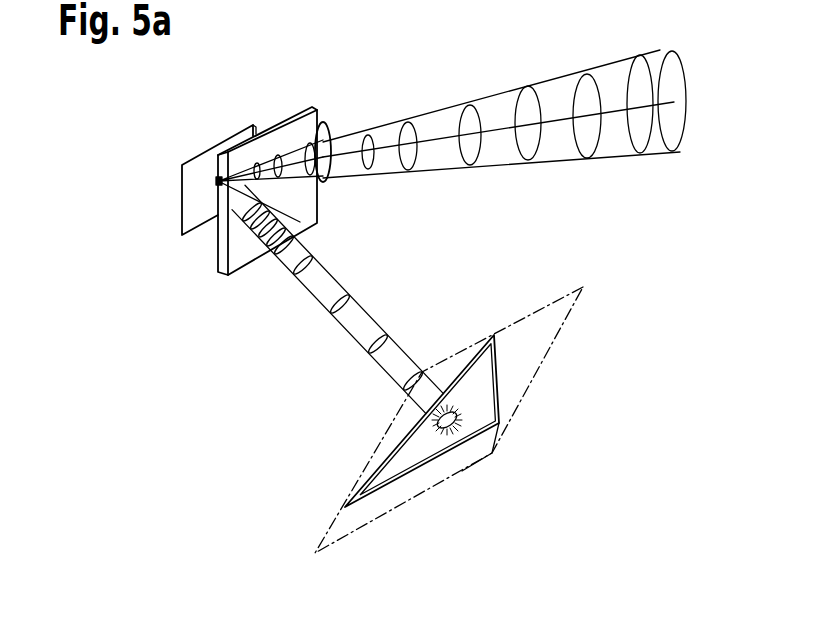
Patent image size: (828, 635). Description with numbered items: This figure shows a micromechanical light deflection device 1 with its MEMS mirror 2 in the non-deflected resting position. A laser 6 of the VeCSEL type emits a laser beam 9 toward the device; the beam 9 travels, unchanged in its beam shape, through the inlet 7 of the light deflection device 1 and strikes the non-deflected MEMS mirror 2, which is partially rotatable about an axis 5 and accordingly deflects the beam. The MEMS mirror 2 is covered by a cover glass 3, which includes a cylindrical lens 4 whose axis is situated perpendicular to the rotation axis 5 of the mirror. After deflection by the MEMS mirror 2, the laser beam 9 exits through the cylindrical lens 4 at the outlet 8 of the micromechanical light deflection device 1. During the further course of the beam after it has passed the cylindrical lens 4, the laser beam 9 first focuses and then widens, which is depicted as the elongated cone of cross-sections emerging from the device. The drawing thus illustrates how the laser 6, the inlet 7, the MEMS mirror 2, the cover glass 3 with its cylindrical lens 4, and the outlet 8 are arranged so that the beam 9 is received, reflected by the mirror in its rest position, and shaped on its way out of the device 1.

The micromechanical light deflection device 1 is at (251, 220).
The MEMS mirror 2 is at (182, 200).
The cover glass 3 is at (218, 255).
The cylindrical lens 4 is at (333, 125).
The axis 5 is at (219, 137).
The laser 6 is at (530, 390).
The inlet 7 is at (263, 277).
The outlet 8 is at (362, 237).
The laser beam 9 is at (637, 156).